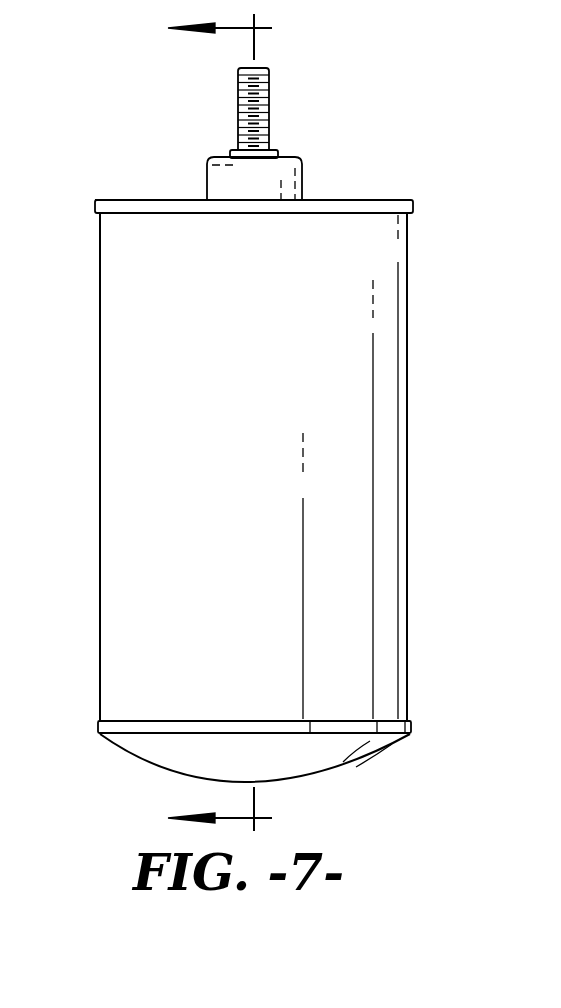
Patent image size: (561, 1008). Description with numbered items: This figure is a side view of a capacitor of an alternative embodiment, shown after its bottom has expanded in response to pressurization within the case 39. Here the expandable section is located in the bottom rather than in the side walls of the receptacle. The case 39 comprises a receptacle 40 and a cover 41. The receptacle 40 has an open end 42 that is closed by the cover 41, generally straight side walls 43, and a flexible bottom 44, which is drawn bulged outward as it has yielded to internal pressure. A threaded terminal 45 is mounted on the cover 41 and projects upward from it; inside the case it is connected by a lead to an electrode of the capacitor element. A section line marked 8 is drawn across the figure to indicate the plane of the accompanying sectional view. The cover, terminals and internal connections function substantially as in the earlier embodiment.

The section line 8- 8 is at (205, 425).
The case 39 is at (412, 315).
The receptacle 40 is at (407, 428).
The cover 41 is at (345, 200).
The open end 42 is at (128, 200).
The side walls 43 is at (115, 480).
The flexible bottom 44 is at (338, 768).
The terminal 45 is at (230, 146).